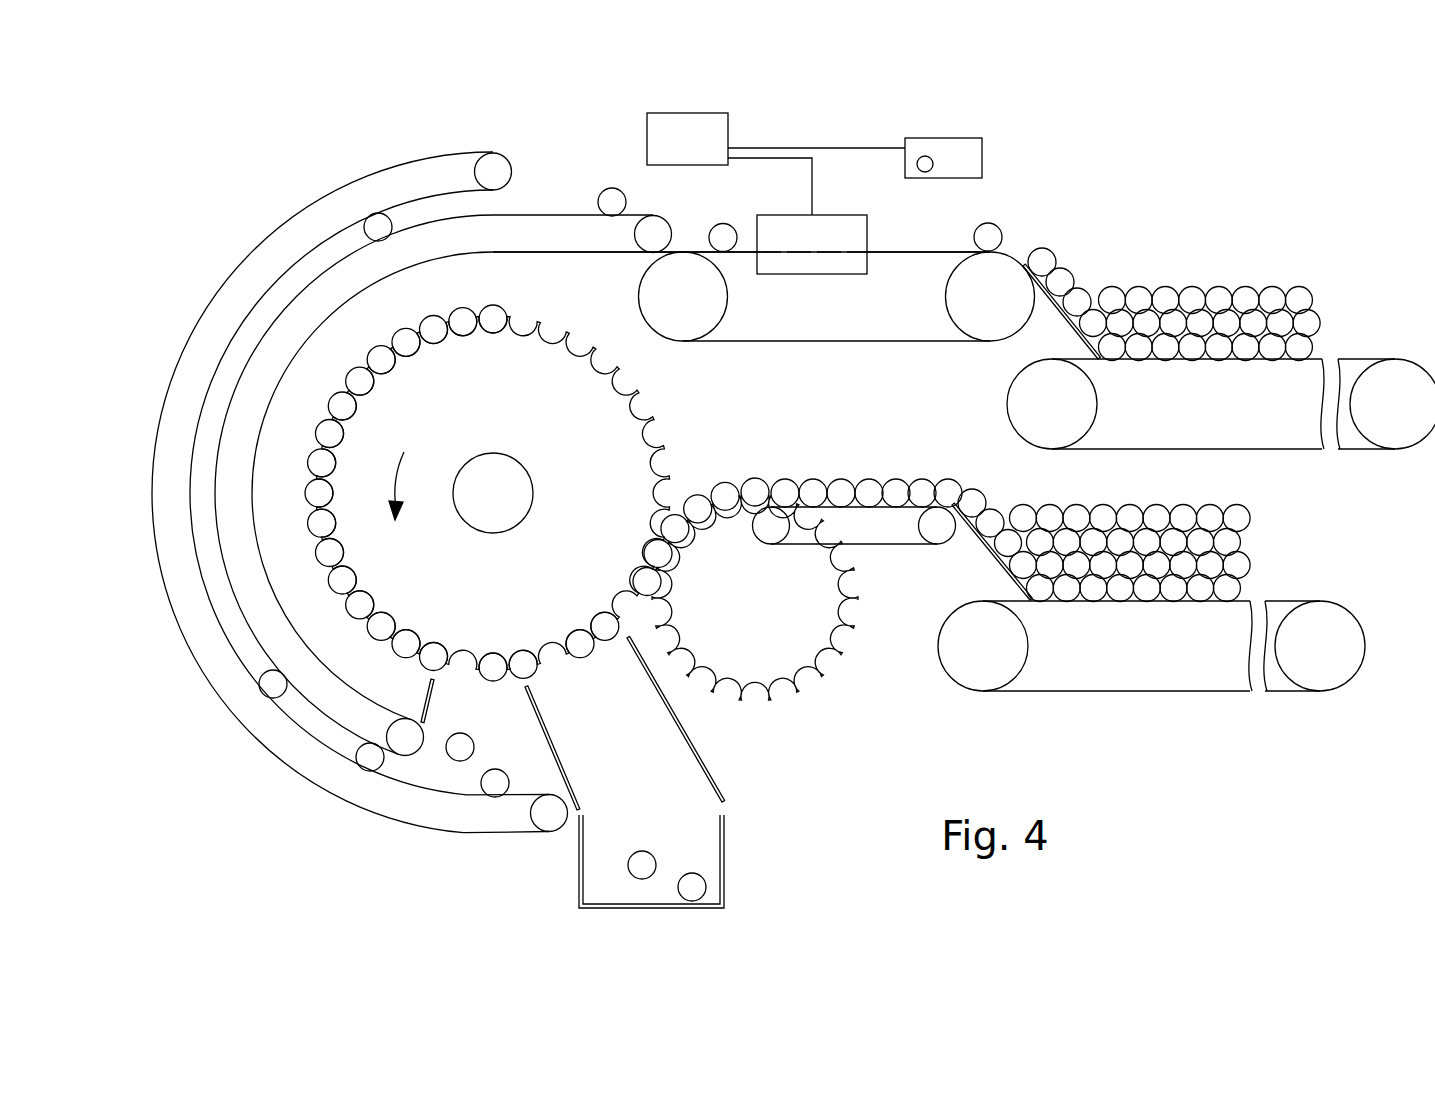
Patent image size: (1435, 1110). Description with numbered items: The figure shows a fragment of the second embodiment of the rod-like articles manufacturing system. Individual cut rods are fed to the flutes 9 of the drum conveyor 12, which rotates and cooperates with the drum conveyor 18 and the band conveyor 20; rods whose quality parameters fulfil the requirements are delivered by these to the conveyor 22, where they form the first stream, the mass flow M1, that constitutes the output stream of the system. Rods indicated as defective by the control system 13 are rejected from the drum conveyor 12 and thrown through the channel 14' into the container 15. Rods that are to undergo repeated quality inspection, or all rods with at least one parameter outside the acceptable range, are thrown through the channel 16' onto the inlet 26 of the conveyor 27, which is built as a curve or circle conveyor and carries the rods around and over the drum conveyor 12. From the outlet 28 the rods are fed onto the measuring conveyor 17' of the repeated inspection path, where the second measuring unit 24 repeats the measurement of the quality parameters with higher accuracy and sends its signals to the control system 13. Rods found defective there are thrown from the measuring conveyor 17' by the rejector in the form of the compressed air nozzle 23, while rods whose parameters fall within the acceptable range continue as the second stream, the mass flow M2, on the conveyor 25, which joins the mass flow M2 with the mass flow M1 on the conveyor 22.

The flute 9 is at (635, 408).
The drum conveyor 12 is at (625, 475).
The control system 13 is at (672, 156).
The channel 14' is at (679, 724).
The container 15 is at (725, 862).
The channel 16' is at (440, 798).
The measuring conveyor 17' is at (776, 234).
The drum conveyor 18 is at (724, 555).
The band conveyor 20 is at (878, 507).
The conveyor 22 is at (1120, 690).
The compressed air nozzle 23 is at (953, 148).
The second measuring unit 24 is at (817, 263).
The conveyor 25 is at (1375, 358).
The inlet 26 is at (450, 785).
The conveyor 27 is at (278, 762).
The outlet 28 is at (557, 196).
The mass flow M1 is at (1267, 540).
The mass flow M2 is at (1203, 252).